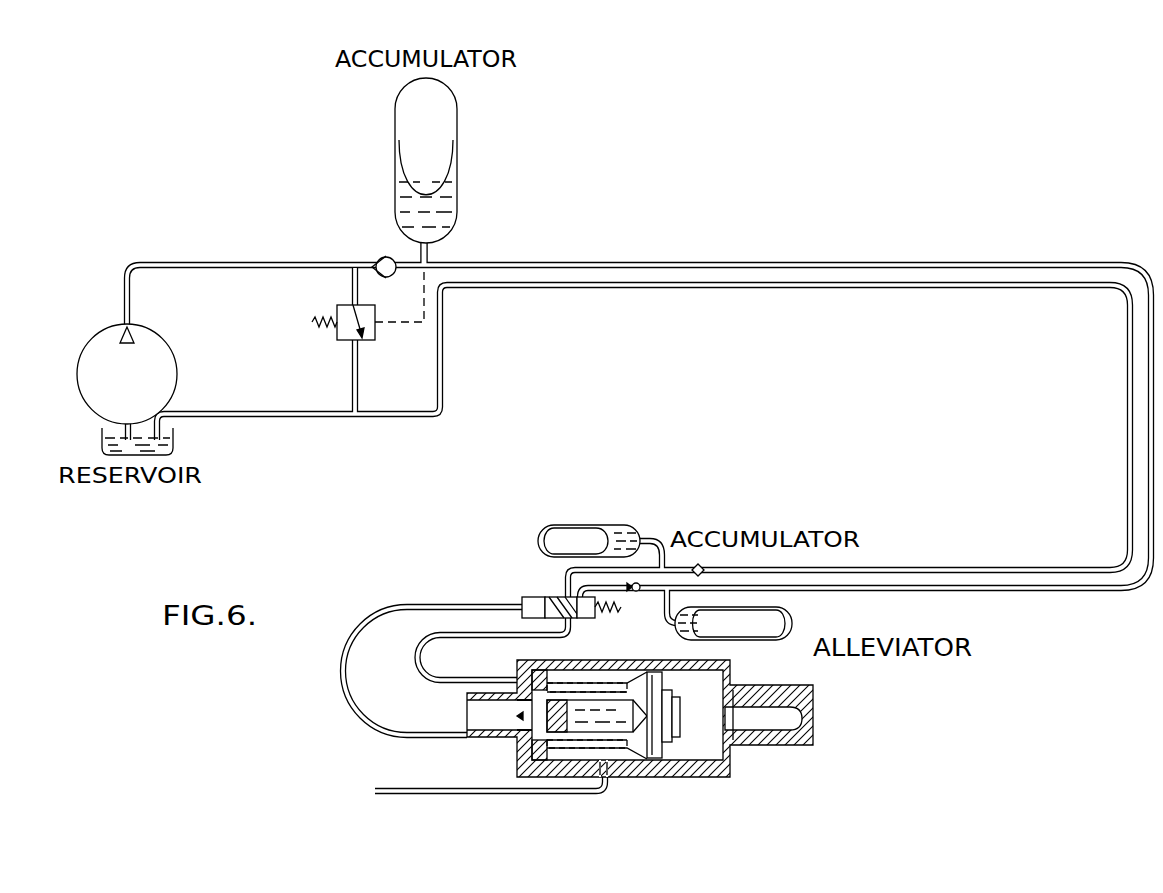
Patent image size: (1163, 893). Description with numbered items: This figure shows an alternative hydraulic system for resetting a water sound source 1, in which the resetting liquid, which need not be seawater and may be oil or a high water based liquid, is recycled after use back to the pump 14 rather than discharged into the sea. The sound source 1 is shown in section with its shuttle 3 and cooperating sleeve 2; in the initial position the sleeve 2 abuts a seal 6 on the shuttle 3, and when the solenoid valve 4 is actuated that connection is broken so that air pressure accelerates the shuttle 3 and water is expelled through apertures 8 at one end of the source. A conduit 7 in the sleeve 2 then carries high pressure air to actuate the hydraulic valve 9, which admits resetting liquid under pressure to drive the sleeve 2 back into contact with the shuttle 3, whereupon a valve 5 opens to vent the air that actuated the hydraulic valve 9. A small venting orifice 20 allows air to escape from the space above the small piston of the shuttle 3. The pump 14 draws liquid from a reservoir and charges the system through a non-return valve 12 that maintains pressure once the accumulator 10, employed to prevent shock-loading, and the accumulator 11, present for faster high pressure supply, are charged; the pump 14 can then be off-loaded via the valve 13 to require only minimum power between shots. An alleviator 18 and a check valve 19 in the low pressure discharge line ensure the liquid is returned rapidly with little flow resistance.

The water sound source 1 is at (645, 663).
The sleeve 2 is at (538, 675).
The shuttle 3 is at (660, 748).
The solenoid valve 4 is at (518, 722).
The valve 5 is at (625, 672).
The seal 6 is at (673, 727).
The conduit 7 is at (620, 772).
The apertures 8 is at (773, 708).
The hydraulic valve 9 is at (536, 597).
The accumulator 10 is at (625, 530).
The accumulator 11 is at (445, 203).
The non-return valve 12 is at (377, 258).
The valve 13 is at (372, 340).
The pump 14 is at (157, 337).
The alleviator 18 is at (792, 620).
The check valve 19 is at (638, 592).
The venting orifice 20 is at (522, 690).